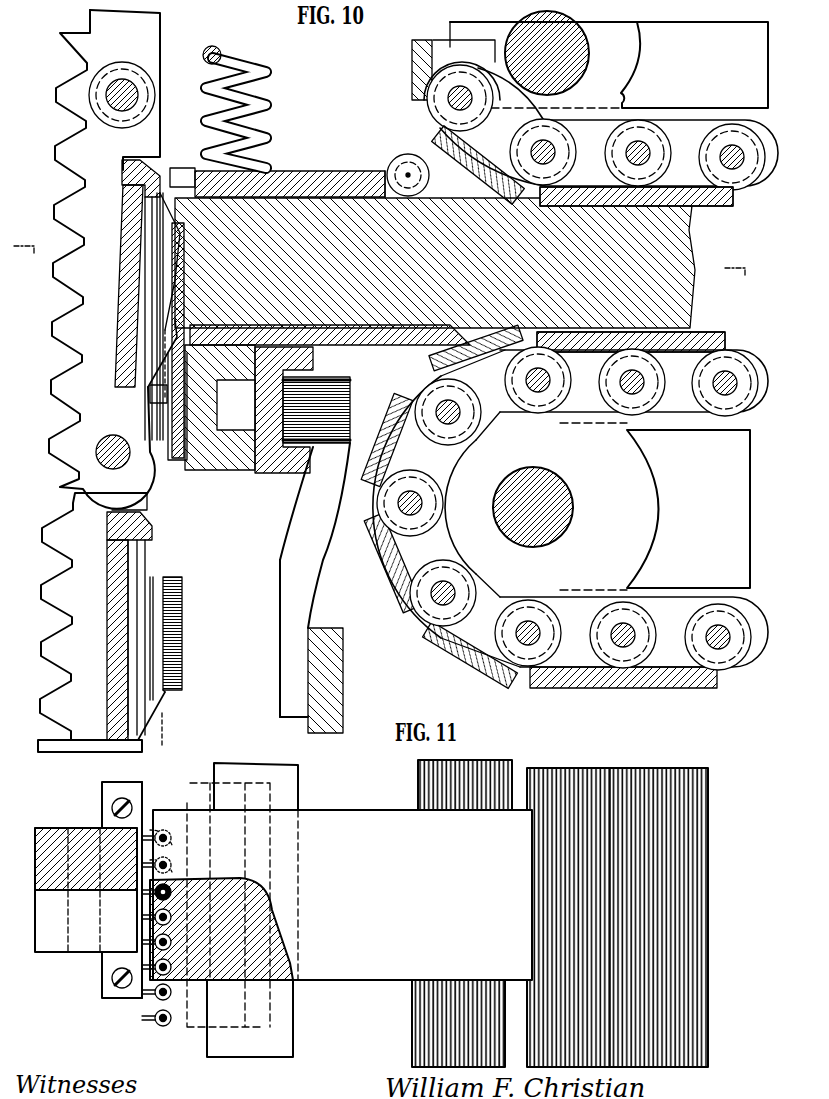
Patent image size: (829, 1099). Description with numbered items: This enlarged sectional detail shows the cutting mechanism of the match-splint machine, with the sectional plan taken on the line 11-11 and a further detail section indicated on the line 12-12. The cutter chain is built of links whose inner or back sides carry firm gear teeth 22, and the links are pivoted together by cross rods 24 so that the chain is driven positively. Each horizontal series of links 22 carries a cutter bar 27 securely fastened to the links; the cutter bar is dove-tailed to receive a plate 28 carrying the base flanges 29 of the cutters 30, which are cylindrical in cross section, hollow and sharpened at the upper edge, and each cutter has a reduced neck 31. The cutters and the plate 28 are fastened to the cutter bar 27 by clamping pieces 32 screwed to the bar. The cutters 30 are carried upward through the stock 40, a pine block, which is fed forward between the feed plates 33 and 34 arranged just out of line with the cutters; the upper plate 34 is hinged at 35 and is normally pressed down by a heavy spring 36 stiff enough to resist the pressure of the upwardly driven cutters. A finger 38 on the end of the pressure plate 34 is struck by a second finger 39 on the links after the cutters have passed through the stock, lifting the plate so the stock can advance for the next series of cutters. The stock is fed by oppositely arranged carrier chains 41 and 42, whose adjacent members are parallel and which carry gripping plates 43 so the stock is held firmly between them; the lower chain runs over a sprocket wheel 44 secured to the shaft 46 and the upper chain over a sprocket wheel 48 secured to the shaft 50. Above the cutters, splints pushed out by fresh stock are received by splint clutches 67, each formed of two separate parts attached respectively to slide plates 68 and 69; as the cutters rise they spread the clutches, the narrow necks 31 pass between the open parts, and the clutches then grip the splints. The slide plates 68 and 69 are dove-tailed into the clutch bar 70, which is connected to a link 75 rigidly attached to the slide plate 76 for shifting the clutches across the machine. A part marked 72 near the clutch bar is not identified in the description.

In FIG. 10, the driving shaft 11 is at (389, 496).
In FIG. 10, the pulley 12 is at (148, 388).
In FIG. 10, the gear teeth 22 is at (150, 44).
In FIG. 11, the gear teeth 22 is at (49, 829).
In FIG. 10, the cross rods 24 is at (137, 90).
In FIG. 10, the cutter bar 27 is at (118, 292).
In FIG. 10, the plate 28 is at (150, 578).
In FIG. 10, the base flanges 29 is at (180, 584).
In FIG. 10, the cutters 30 is at (282, 172).
In FIG. 11, the cutters 30 is at (163, 823).
In FIG. 10, the reduced neck 31 is at (187, 524).
In FIG. 11, the reduced neck 31 is at (149, 831).
In FIG. 10, the clamping pieces 32 is at (154, 558).
In FIG. 11, the clamping pieces 32 is at (123, 798).
In FIG. 10, the feed plate 33 is at (360, 346).
In FIG. 10, the pressure plate 34 is at (362, 173).
In FIG. 10, the hinge 35 is at (409, 155).
In FIG. 10, the heavy spring 36 is at (264, 101).
In FIG. 10, the finger 38 is at (186, 170).
In FIG. 10, the second finger 39 is at (188, 461).
In FIG. 10, the stock 40 is at (332, 200).
In FIG. 10, the lower stock-carrier chain 41 is at (757, 353).
In FIG. 10, the upper stock-carrier chain 42 is at (757, 194).
In FIG. 10, the gripping plates 43 is at (714, 207).
In FIG. 11, the gripping plates 43 is at (641, 790).
In FIG. 10, the sprocket wheel 44 is at (642, 486).
In FIG. 10, the shaft 46 is at (576, 519).
In FIG. 10, the sprocket wheel 48 is at (626, 70).
In FIG. 10, the shaft 50 is at (585, 42).
In FIG. 11, the splint clutches 67 is at (156, 1024).
In FIG. 10, the slide plate 68 is at (214, 460).
In FIG. 10, the slide plate 69 is at (242, 447).
In FIG. 11, the slide plate 69 is at (203, 1029).
In FIG. 10, the clutch bar 70 is at (302, 448).
In FIG. 11, the clutch bar 70 is at (295, 1031).
In FIG. 10, the arm 72 is at (285, 527).
In FIG. 10, the link 75 is at (281, 634).
In FIG. 10, the slide plate 76 is at (344, 680).